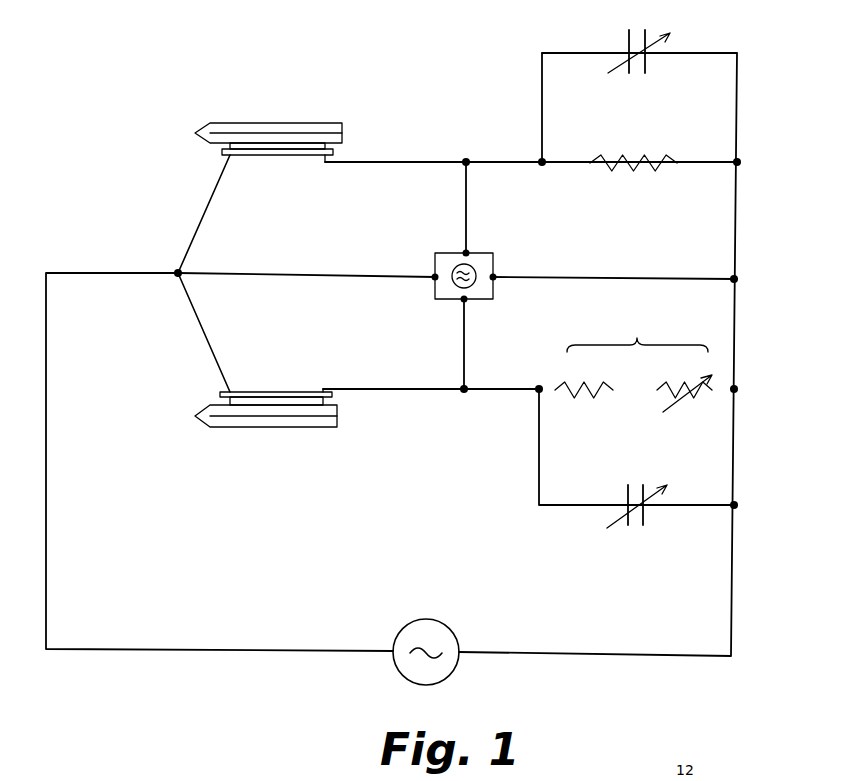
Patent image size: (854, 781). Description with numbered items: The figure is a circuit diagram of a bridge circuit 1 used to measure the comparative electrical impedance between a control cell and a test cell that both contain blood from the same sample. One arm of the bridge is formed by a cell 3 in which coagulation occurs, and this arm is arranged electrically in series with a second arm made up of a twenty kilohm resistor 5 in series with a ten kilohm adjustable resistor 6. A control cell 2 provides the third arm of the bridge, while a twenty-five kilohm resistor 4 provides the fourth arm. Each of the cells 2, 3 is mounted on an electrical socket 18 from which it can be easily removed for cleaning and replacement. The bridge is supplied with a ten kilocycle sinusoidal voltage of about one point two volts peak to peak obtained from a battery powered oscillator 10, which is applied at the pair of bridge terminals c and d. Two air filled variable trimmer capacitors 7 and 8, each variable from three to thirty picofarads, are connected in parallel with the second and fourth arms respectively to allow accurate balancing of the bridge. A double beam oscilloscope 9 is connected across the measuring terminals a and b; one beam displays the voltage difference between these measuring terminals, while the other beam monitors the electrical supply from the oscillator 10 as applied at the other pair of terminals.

The bridge circuit 1 is at (447, 97).
The control cell 2 is at (239, 123).
The cell 3 is at (262, 428).
The resistor 4 is at (641, 171).
The resistor 5 is at (608, 398).
The adjustable resistor 6 is at (711, 398).
The variable trimmer capacitor 7 is at (637, 66).
The variable trimmer capacitor 8 is at (638, 528).
The double beam oscilloscope 9 is at (482, 258).
The battery powered oscillator 10 is at (402, 634).
The electrical socket 18 is at (255, 156).